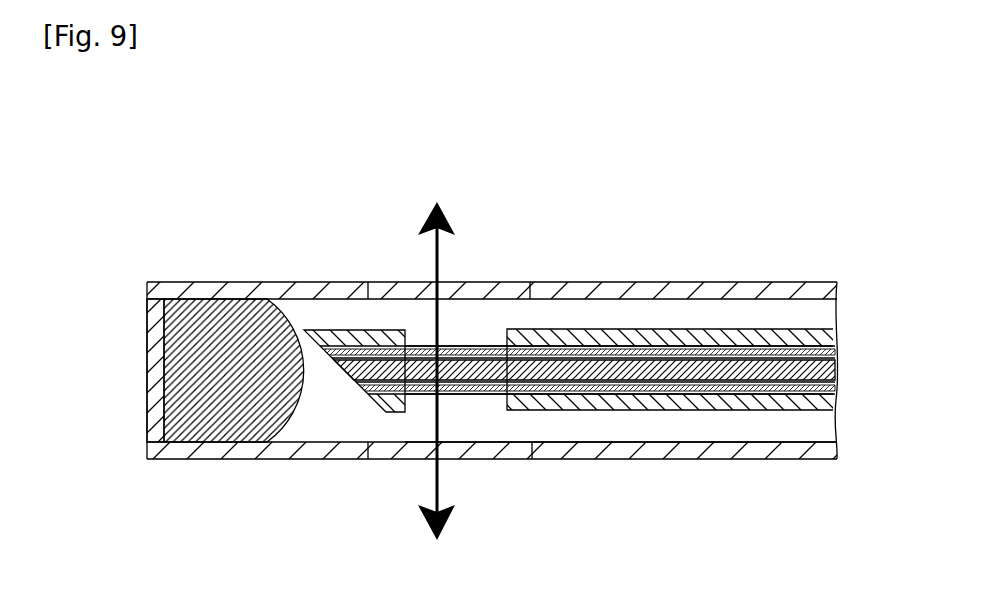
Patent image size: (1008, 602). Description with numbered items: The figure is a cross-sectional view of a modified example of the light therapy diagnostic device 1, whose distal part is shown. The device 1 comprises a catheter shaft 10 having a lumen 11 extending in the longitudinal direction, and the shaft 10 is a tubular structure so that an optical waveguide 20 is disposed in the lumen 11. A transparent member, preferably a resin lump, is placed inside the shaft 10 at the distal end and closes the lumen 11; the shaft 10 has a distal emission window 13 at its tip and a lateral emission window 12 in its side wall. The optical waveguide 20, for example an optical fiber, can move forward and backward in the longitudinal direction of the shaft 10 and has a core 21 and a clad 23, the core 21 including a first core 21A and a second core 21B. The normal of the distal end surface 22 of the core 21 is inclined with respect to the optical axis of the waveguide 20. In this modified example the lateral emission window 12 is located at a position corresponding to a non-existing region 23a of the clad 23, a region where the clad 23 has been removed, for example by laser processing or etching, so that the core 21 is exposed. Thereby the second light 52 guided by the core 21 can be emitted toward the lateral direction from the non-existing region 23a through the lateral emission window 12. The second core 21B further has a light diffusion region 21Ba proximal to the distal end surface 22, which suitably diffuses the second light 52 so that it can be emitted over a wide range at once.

The light therapy diagnostic device 1 is at (125, 218).
The catheter shaft 10 is at (273, 296).
The lumen 11 is at (620, 423).
The lateral emission window 12 is at (467, 292).
The distal emission window 13 is at (155, 433).
The optical waveguide 20 is at (800, 178).
The core 21 is at (753, 233).
The first core 21A is at (627, 357).
The second core 21B is at (685, 347).
The light diffusion region 21Ba is at (495, 348).
The distal end surface 22 is at (360, 385).
The clad 23 is at (753, 333).
The non-existing region of the clad 23a is at (461, 406).
The second light 52 is at (433, 265).